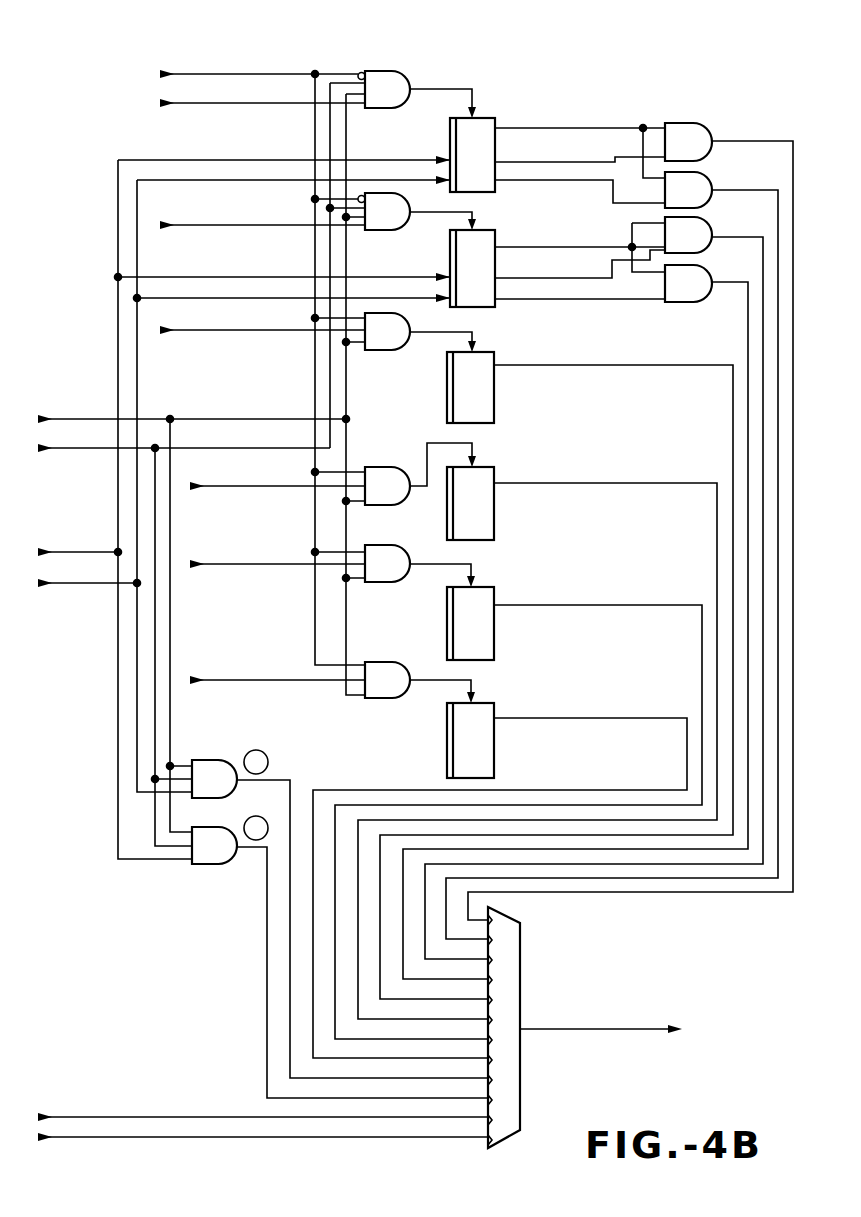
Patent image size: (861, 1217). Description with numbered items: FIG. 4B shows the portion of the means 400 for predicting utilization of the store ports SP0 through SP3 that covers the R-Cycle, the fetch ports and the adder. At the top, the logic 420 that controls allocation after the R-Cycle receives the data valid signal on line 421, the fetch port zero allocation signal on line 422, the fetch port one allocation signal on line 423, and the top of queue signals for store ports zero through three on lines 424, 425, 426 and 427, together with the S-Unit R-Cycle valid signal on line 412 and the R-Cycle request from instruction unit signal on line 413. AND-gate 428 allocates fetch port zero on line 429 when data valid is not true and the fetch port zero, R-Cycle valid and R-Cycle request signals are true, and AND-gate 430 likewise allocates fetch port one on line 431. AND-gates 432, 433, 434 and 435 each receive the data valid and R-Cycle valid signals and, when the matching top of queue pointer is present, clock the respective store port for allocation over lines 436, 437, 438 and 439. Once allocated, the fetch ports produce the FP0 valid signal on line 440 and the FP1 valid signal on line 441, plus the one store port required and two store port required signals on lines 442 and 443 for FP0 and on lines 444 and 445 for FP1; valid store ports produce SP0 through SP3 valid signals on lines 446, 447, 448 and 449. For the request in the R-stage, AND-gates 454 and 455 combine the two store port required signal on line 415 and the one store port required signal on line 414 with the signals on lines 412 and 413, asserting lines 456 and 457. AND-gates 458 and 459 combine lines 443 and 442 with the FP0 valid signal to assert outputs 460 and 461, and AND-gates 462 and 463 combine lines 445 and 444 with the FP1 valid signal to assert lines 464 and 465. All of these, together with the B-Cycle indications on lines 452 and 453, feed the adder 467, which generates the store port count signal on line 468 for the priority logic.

The means for predicting utilization of the storage ports 400 is at (668, 958).
The S-Unit R-Cycle valid signal line 412 is at (99, 419).
The R-Cycle request from instruction unit signal line 413 is at (88, 450).
The 1 store port required signal line 414 is at (88, 586).
The 2 store port required signal line 415 is at (100, 552).
The logic 420 is at (385, 50).
The data valid signal line 421 is at (311, 72).
The fetch port 0 allocation signal line 422 is at (278, 105).
The fetch port 1 allocation signal line 423 is at (268, 227).
The top of queue signal line for store port 0 424 is at (288, 332).
The top of queue signal line for store port 1 425 is at (288, 488).
The top of queue signal line for store port 2 426 is at (292, 567).
The top of queue signal line for store port 3 427 is at (292, 683).
The AND-gate 428 is at (405, 72).
The output line of AND-gate 428 429 is at (463, 88).
The AND-gate 430 is at (381, 230).
The output line of AND-gate 430 431 is at (476, 230).
The AND-gate 432 is at (382, 350).
The AND-gate 433 is at (376, 505).
The AND-gate 434 is at (380, 582).
The AND-gate 435 is at (370, 698).
The output line of AND-gate 432 436 is at (472, 340).
The output line of AND-gate 433 437 is at (474, 450).
The output line of AND-gate 434 438 is at (473, 582).
The output line of AND-gate 435 439 is at (474, 698).
The FP0 valid signal line 440 is at (600, 128).
The FP1 valid signal line 441 is at (562, 247).
The 1 store port required from fetch port 0 signal line 442 is at (560, 180).
The 2 store port required from fetch port 0 signal line 443 is at (580, 162).
The 1 store port required from fetch port 1 signal line 444 is at (586, 300).
The 2 store port required from fetch port 1 signal line 445 is at (568, 278).
The SP0 valid signal line 446 is at (600, 365).
The SP1 valid signal line 447 is at (615, 483).
The SP2 valid signal line 448 is at (620, 605).
The SP3 valid signal line 449 is at (600, 718).
The output line of AND-gate 450 452 is at (155, 1140).
The output line of AND-gate 451 453 is at (122, 1115).
The AND-gate 454 is at (212, 760).
The AND-gate 455 is at (200, 866).
The output line of AND-gate 454 456 is at (290, 782).
The output line of AND-gate 455 457 is at (267, 935).
The AND-gate 458 is at (690, 125).
The AND-gate 459 is at (694, 180).
The output line of AND-gate 458 460 is at (730, 141).
The output line of AND-gate 459 461 is at (730, 190).
The AND-gate 462 is at (690, 222).
The AND-gate 463 is at (690, 272).
The output line of AND-gate 462 464 is at (730, 237).
The output line of AND-gate 463 465 is at (740, 284).
The adder 467 is at (520, 1082).
The store port count signal line 468 is at (555, 1028).